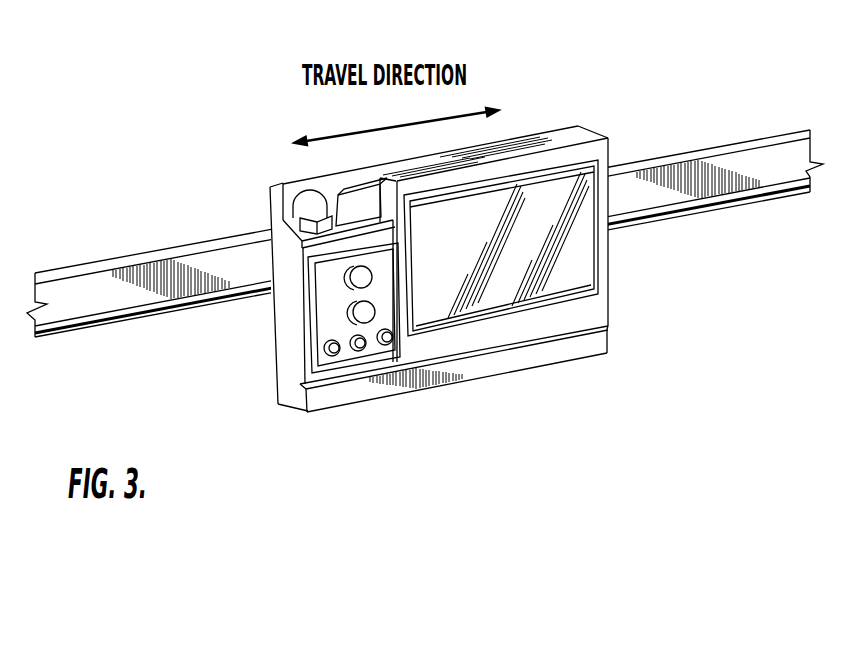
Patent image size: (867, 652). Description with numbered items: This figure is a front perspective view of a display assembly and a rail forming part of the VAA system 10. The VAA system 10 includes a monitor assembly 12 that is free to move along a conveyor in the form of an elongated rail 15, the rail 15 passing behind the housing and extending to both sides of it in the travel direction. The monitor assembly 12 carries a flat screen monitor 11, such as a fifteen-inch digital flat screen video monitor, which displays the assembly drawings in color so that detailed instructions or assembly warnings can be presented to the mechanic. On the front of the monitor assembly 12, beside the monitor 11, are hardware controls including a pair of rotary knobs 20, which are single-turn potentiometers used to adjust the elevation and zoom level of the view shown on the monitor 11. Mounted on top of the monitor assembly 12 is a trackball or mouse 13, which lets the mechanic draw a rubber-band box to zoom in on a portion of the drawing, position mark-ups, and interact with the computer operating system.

The VAA system 10 is at (429, 211).
The flat screen monitor 11 is at (583, 278).
The monitor assembly 12 is at (549, 128).
The trackball or mouse 13 is at (303, 198).
The elongated rail 15 is at (684, 218).
The rotary knobs 20 is at (320, 316).